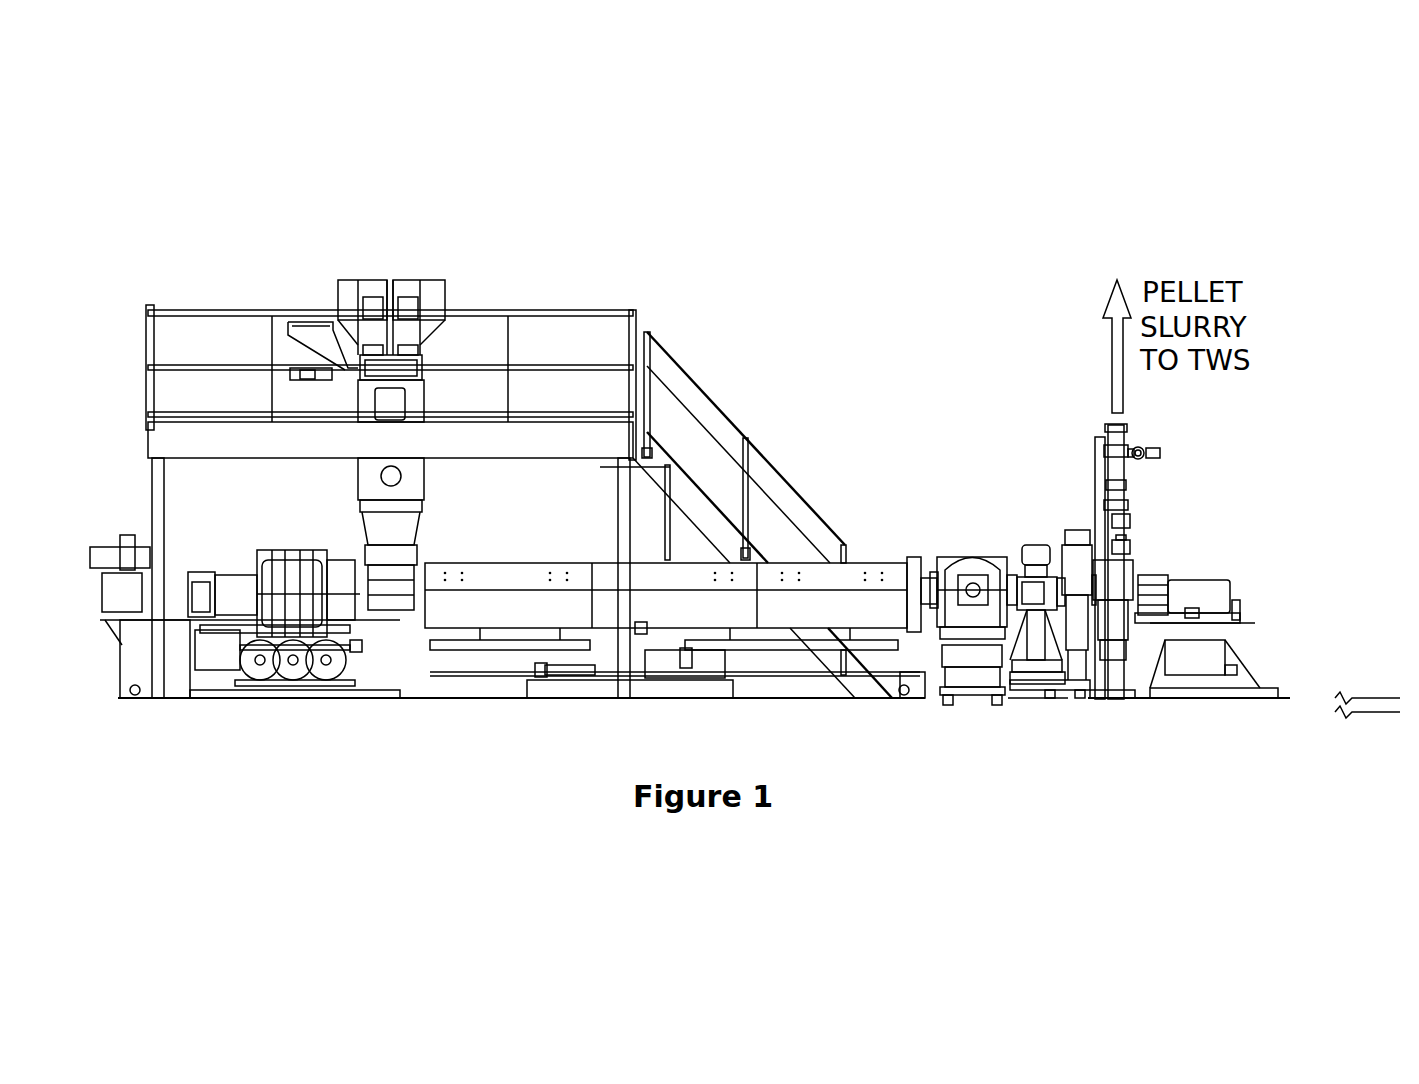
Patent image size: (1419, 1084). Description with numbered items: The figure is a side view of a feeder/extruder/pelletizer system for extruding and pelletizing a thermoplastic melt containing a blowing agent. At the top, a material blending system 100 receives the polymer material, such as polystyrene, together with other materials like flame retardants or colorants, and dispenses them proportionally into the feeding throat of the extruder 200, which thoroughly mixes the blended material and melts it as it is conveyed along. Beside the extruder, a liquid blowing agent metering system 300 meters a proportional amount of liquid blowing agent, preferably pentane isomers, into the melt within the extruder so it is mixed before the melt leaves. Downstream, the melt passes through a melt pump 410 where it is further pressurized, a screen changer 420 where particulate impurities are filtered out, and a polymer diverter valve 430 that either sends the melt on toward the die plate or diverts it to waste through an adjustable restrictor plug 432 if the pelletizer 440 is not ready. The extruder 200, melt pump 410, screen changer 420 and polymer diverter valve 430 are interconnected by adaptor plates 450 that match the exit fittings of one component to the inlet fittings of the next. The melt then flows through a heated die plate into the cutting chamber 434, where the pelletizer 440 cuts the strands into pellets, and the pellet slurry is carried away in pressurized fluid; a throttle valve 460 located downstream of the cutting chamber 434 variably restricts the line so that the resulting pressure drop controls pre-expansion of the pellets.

The material blending system 100 is at (362, 272).
The extruder 200 is at (482, 603).
The liquid blowing agent metering system 300 is at (274, 700).
The melt pump 410 is at (983, 540).
The screen changer 420 is at (1040, 515).
The polymer diverter valve 430 is at (1073, 503).
The adjustable restrictor plug 432 is at (1072, 692).
The cutting chamber 434 is at (1128, 575).
The pelletizer 440 is at (1213, 565).
The adaptor plates 450 is at (1059, 558).
The throttle valve 460 is at (1132, 542).